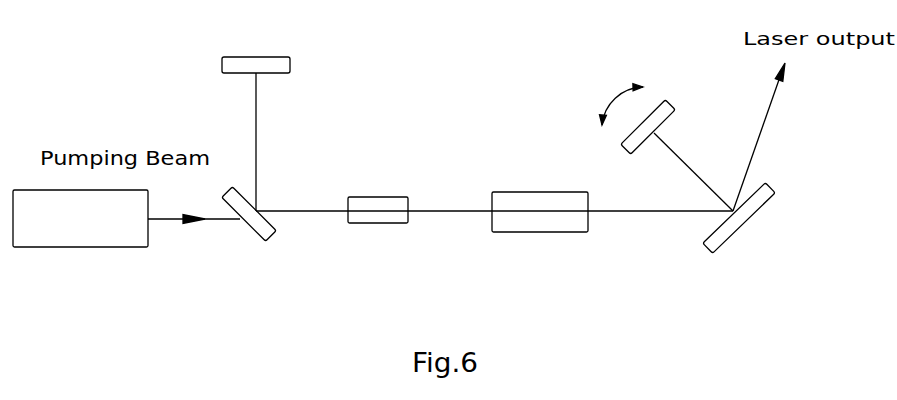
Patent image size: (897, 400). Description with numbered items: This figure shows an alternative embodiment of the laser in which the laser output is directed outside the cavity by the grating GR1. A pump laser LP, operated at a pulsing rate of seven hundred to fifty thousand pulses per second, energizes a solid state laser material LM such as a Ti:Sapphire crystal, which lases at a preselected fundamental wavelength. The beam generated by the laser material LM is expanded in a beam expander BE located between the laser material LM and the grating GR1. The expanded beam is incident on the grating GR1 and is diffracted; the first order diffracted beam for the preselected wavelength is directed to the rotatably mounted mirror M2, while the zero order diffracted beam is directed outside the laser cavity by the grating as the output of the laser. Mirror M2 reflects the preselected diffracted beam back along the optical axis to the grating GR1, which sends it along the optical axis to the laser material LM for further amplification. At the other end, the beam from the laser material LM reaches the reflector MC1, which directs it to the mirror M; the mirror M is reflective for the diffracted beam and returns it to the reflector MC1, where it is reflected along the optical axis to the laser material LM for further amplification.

The pump laser LP is at (80, 238).
The reflector MC1 is at (254, 236).
The mirror M is at (273, 65).
The laser material LM is at (378, 198).
The beam expander BE is at (540, 199).
The mirror M2 is at (645, 116).
The grating GR1 is at (739, 231).